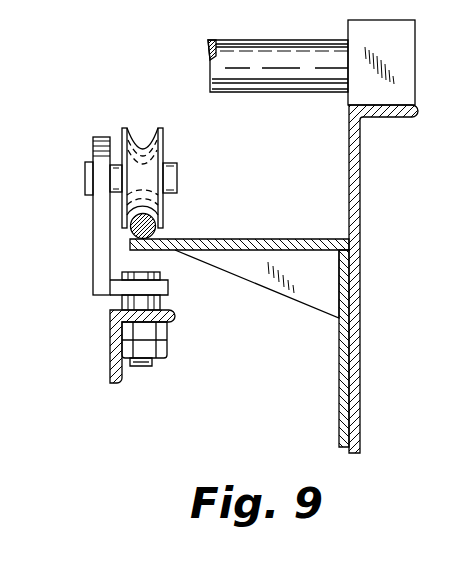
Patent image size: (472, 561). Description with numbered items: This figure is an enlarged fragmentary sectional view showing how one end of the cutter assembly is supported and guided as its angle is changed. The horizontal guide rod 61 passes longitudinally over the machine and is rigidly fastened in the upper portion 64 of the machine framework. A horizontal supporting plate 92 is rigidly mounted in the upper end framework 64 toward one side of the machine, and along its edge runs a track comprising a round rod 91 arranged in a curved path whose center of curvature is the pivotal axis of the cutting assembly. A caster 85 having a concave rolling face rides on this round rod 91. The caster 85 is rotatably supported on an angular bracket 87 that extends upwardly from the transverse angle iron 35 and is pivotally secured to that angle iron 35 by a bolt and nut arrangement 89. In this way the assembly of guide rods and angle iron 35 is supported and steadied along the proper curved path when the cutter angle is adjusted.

The transverse angle iron 35 is at (112, 370).
The horizontal guide rod 61 is at (265, 80).
The upper portion of the machine framework 64 is at (358, 275).
The caster 85 is at (143, 150).
The angular bracket 87 is at (100, 249).
The bolt and nut arrangement 89 is at (160, 337).
The round rod 91 is at (158, 233).
The horizontal supporting plate 92 is at (288, 239).